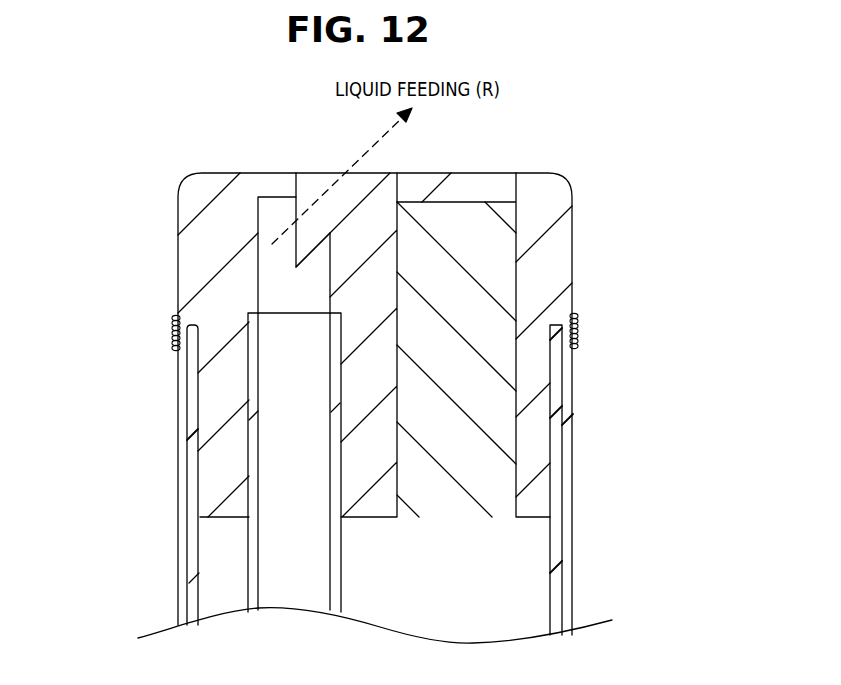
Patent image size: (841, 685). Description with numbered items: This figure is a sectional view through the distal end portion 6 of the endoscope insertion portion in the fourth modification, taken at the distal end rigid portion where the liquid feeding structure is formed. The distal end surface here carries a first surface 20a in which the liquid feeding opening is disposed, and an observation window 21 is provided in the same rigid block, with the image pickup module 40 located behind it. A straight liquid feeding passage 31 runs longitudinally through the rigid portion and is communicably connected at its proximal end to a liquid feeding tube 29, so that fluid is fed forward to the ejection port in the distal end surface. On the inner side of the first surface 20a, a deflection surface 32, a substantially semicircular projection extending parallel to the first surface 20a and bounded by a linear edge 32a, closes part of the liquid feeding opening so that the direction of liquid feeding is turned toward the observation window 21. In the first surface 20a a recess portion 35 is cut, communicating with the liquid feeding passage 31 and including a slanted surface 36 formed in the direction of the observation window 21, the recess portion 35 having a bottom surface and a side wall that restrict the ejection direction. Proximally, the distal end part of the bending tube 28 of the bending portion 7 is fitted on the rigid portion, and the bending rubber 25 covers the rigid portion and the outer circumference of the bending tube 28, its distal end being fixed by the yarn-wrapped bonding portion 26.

The distal end portion 6 is at (548, 133).
The bending portion 7 is at (612, 580).
The first surface 20a is at (217, 175).
The observation window 21 is at (461, 173).
The bending rubber 25 is at (188, 436).
The yarn-wrapped bonding portion 26 is at (580, 331).
The bending tube 28 is at (200, 524).
The liquid feeding tube 29 is at (250, 574).
The liquid feeding passage 31 is at (267, 285).
The deflection surface 32 is at (268, 203).
The linear edge 32a is at (307, 180).
The recess portion 35 is at (333, 177).
The slanted surface 36 is at (372, 176).
The image pickup module 40 is at (478, 273).